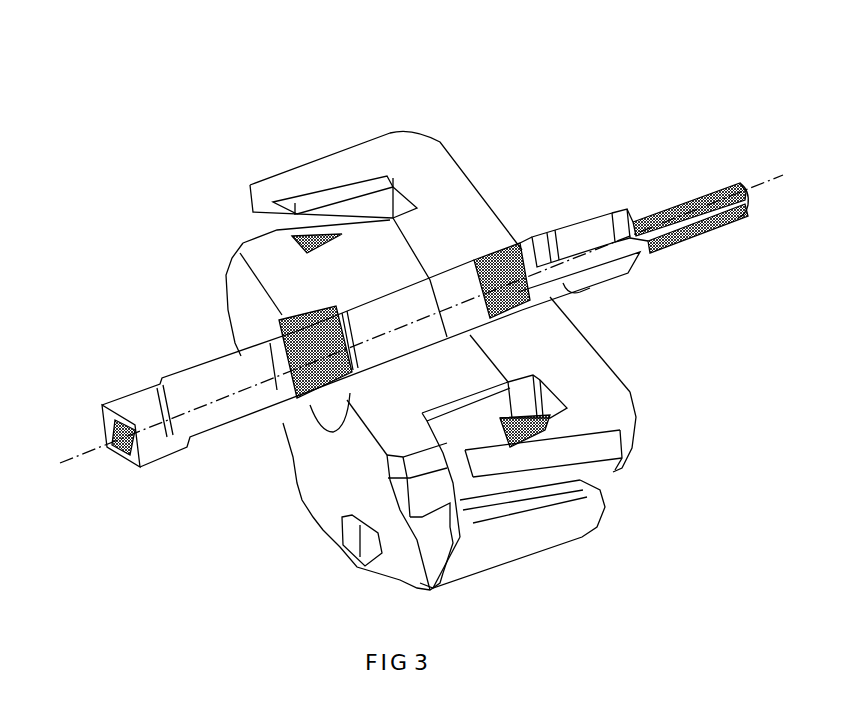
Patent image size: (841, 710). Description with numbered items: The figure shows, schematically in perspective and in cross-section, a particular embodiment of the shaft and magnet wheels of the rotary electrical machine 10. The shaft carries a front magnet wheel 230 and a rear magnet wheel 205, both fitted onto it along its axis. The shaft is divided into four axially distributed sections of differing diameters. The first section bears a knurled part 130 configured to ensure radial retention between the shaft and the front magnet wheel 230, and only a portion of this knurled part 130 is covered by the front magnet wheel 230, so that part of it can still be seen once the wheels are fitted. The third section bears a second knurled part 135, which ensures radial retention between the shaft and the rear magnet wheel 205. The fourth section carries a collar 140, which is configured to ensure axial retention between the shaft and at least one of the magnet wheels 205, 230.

The rotary electrical machine 10 is at (636, 72).
The knurled part 130 is at (303, 397).
The knurled part 135 is at (507, 273).
The collar 140 is at (537, 237).
The rear magnet wheel 205 is at (613, 392).
The front magnet wheel 230 is at (323, 512).